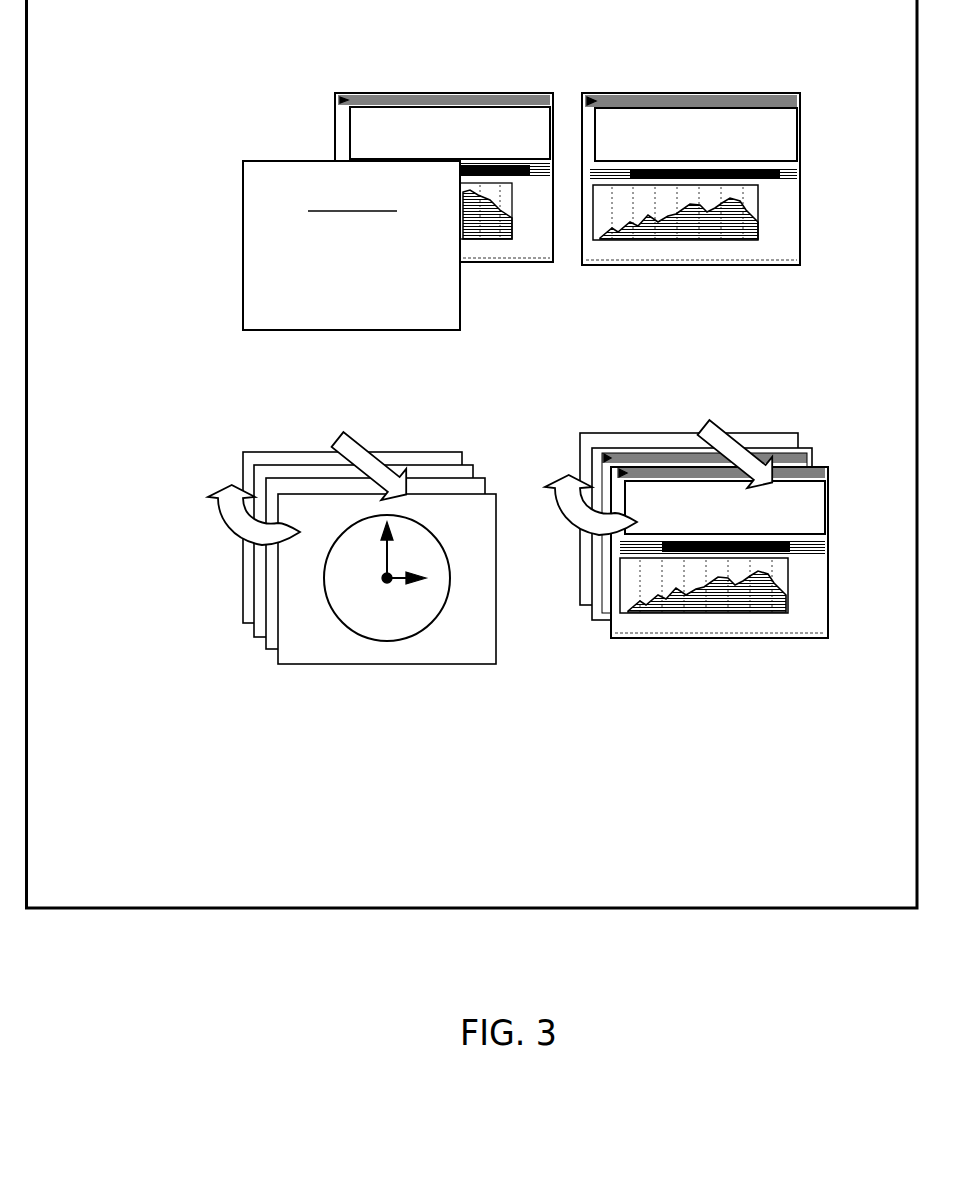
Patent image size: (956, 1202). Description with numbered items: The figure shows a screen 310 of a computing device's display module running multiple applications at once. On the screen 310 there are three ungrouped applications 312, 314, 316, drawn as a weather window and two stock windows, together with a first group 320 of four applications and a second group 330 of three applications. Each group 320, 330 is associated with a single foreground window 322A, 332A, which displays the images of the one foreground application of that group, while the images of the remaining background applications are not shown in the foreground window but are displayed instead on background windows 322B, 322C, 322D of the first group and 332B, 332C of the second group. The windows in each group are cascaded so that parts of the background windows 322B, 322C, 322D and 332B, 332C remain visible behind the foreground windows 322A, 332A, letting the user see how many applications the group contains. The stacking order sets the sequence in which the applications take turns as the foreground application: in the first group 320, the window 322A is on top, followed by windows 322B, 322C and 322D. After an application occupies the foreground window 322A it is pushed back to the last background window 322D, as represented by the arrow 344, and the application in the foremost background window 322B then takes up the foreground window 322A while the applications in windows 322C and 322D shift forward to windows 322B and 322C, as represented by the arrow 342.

The screen 310 is at (155, 104).
The ungrouped application 312 is at (243, 288).
The ungrouped application 314 is at (445, 92).
The ungrouped application 316 is at (707, 93).
The first group of applications 320 is at (354, 560).
The foreground window 322A is at (277, 657).
The background window 322B is at (265, 621).
The background window 322C is at (253, 598).
The background window 322D is at (242, 556).
The second group of applications 330 is at (704, 547).
The foreground window 332A is at (612, 627).
The background window 332B is at (592, 595).
The background window 332C is at (580, 550).
The arrow 342 is at (360, 446).
The arrow 344 is at (217, 515).